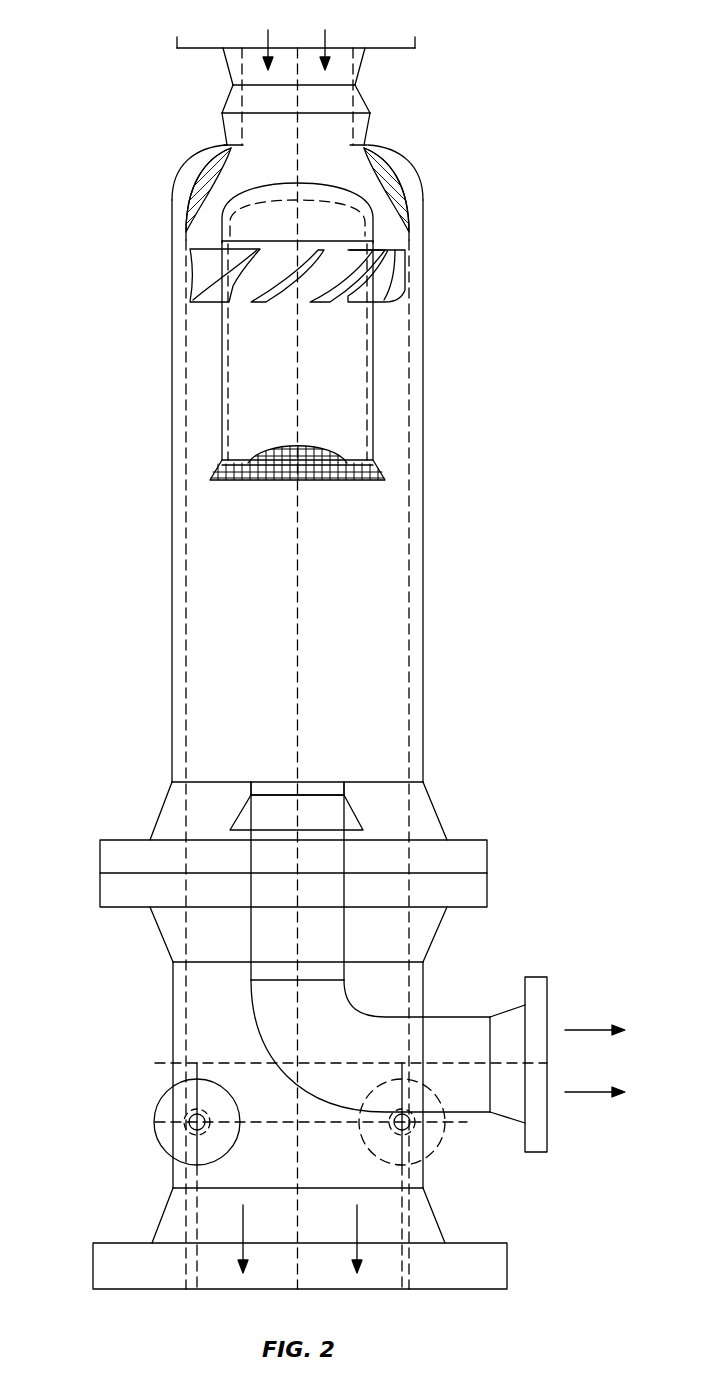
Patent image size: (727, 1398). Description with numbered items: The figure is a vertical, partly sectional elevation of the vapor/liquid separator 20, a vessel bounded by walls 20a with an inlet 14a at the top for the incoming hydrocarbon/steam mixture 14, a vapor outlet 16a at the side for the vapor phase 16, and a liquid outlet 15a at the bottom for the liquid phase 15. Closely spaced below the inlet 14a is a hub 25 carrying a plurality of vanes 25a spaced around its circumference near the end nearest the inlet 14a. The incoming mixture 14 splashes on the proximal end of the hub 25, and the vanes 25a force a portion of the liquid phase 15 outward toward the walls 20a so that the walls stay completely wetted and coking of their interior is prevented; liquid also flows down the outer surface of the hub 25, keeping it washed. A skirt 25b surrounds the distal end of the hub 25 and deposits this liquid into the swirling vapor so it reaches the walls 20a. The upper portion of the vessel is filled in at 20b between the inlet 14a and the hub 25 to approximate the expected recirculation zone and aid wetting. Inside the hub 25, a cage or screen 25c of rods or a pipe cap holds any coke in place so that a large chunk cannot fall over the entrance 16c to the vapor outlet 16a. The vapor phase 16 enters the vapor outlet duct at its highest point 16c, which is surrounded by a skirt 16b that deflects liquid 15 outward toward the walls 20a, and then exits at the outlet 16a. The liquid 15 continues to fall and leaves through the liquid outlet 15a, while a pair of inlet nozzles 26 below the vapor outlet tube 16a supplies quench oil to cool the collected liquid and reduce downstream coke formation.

The hydrocarbon/steam mixture 14 is at (272, 38).
The inlet 14a is at (363, 65).
The liquid phase 15 is at (357, 1233).
The liquid outlet 15a is at (508, 1250).
The vapor phase 16 is at (590, 1028).
The vapor outlet 16a is at (535, 975).
The skirt 16b is at (355, 810).
The entrance 16c is at (270, 788).
The vapor/liquid separator 20 is at (530, 242).
The walls 20a is at (423, 523).
The filled-in area 20b is at (400, 172).
The hub 25 is at (373, 215).
The vanes 25a is at (200, 282).
The skirt 25b is at (383, 476).
The cage or screen 25c is at (247, 453).
The inlet nozzles 26 is at (160, 1105).